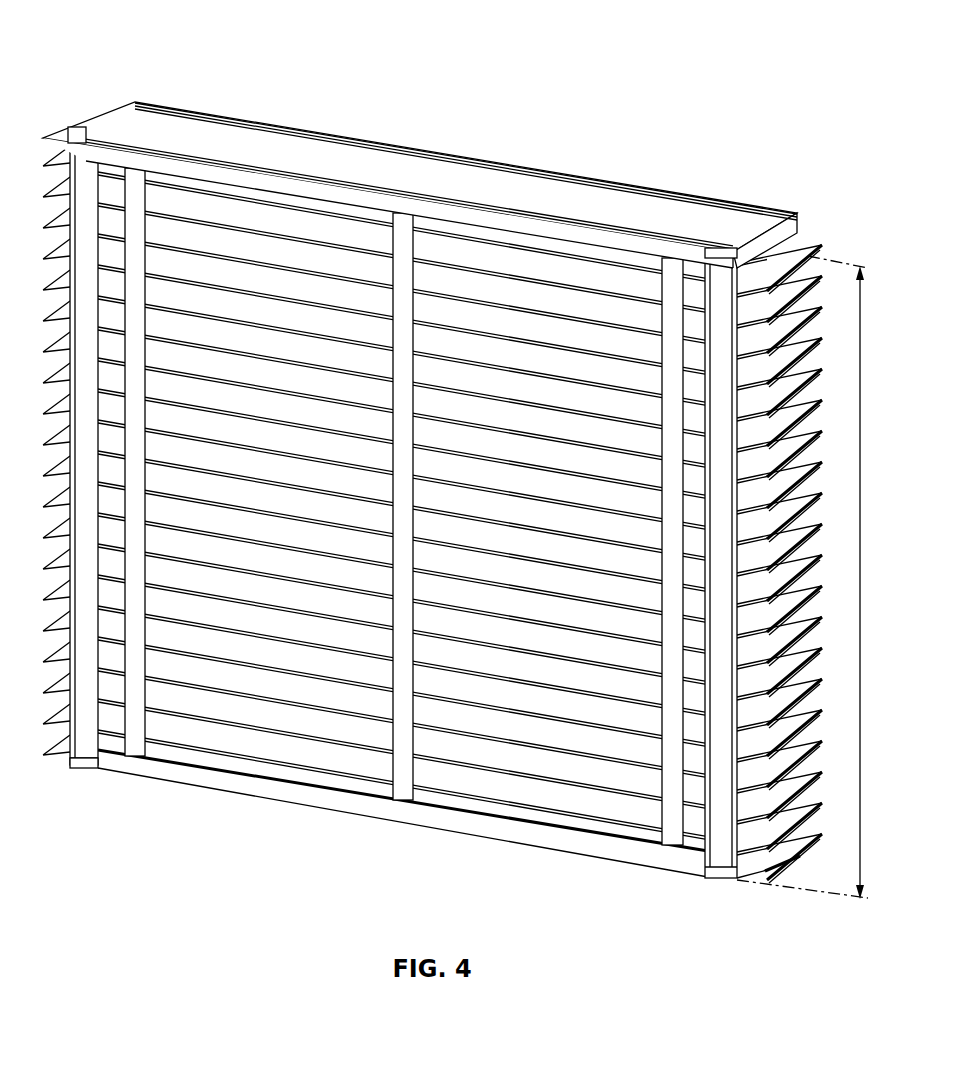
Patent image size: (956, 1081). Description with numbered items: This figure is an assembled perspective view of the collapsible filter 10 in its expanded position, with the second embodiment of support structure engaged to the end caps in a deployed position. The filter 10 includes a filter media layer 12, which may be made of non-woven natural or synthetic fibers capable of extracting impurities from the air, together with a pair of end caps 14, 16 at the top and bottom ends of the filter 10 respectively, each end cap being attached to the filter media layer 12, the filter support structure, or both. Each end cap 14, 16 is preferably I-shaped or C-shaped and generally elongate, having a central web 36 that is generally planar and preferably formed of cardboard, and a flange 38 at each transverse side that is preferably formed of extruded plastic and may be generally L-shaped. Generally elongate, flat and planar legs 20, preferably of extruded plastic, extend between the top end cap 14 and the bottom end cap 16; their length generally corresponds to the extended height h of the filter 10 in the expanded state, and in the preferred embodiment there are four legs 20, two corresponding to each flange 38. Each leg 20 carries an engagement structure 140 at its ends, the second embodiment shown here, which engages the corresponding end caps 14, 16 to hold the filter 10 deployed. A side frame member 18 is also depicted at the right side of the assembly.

The filter 10 is at (118, 44).
The filter media layer 12 is at (780, 868).
The top end cap 14 is at (222, 138).
The bottom end cap 16 is at (357, 805).
The side frame member 18 is at (720, 810).
The legs 20 is at (85, 528).
The central web 36 is at (295, 147).
The flange 38 is at (410, 183).
The engagement structure 140 is at (96, 796).
The extended height h is at (808, 577).